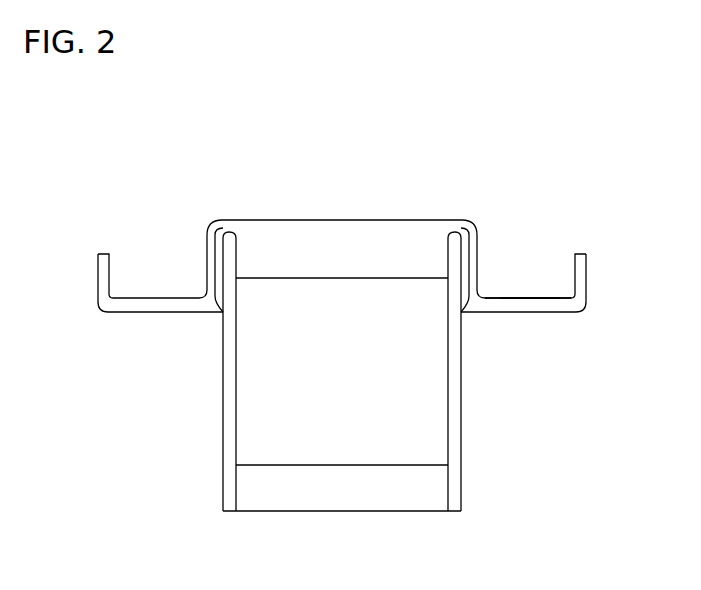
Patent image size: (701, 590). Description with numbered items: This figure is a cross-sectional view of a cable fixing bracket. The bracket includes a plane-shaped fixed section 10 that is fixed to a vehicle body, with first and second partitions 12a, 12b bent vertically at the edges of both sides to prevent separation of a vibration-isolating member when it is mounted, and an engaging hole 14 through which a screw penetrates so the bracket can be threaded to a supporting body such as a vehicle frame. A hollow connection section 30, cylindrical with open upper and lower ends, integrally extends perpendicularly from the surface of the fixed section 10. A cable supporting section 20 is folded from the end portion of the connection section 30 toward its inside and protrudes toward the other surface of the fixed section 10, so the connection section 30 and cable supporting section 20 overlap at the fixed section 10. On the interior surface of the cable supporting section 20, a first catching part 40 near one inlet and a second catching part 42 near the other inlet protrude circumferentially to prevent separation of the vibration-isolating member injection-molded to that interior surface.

The fixed section 10 is at (497, 312).
The first partition 12a is at (583, 254).
The second partition 12b is at (100, 254).
The engaging hole 14 is at (530, 300).
The cable supporting section 20 is at (461, 423).
The connection section 30 is at (207, 250).
The first catching part 40 is at (240, 278).
The second catching part 42 is at (240, 465).